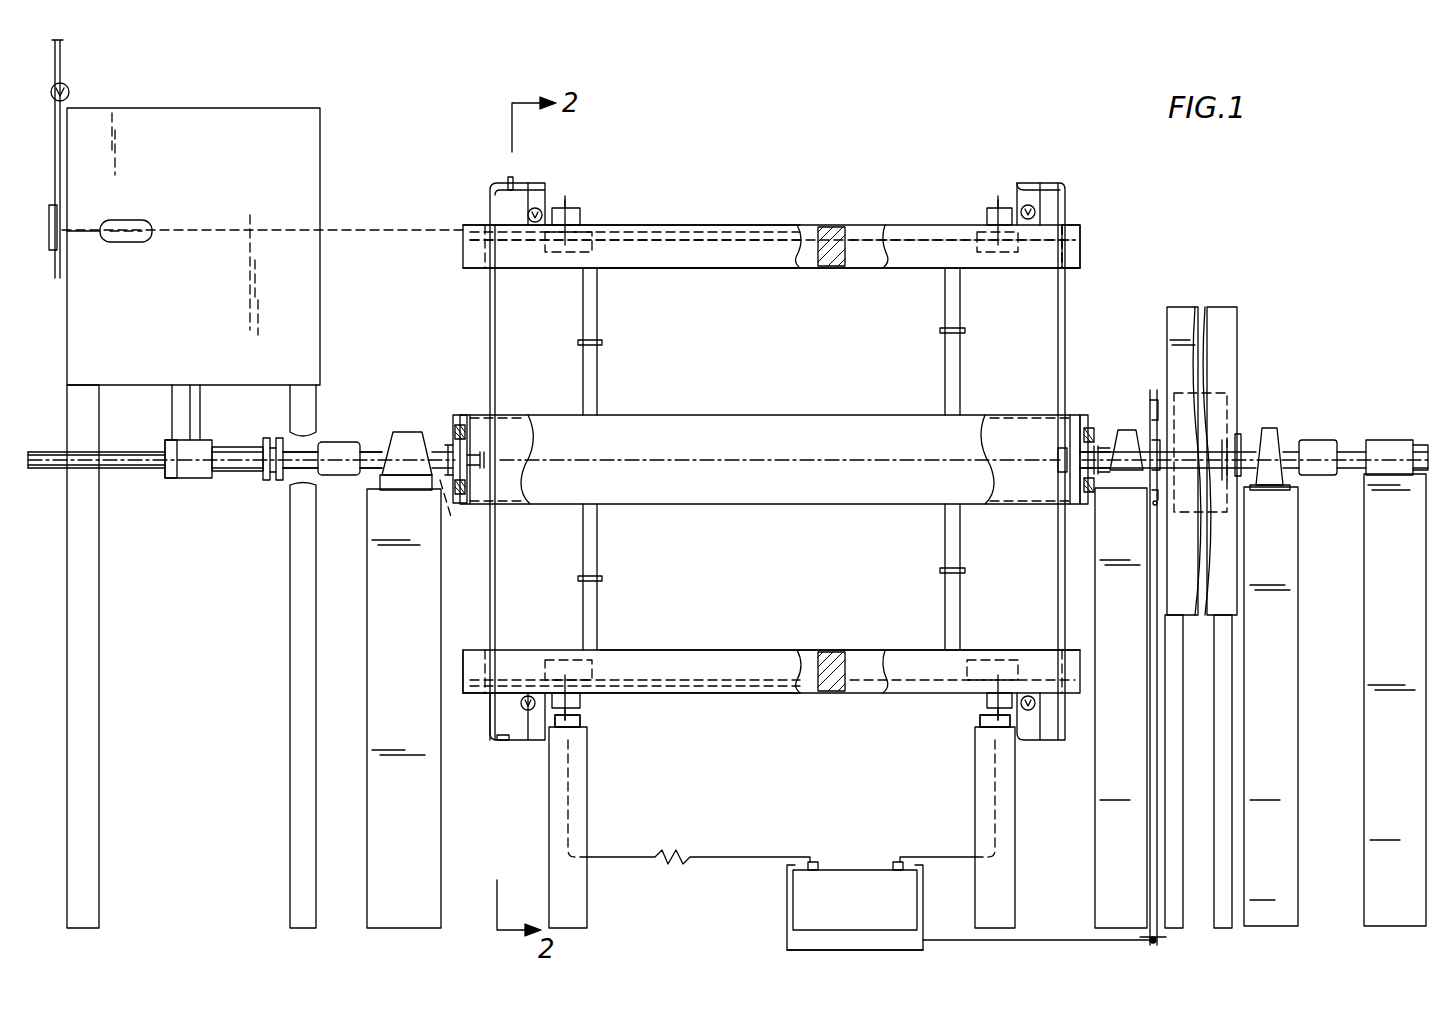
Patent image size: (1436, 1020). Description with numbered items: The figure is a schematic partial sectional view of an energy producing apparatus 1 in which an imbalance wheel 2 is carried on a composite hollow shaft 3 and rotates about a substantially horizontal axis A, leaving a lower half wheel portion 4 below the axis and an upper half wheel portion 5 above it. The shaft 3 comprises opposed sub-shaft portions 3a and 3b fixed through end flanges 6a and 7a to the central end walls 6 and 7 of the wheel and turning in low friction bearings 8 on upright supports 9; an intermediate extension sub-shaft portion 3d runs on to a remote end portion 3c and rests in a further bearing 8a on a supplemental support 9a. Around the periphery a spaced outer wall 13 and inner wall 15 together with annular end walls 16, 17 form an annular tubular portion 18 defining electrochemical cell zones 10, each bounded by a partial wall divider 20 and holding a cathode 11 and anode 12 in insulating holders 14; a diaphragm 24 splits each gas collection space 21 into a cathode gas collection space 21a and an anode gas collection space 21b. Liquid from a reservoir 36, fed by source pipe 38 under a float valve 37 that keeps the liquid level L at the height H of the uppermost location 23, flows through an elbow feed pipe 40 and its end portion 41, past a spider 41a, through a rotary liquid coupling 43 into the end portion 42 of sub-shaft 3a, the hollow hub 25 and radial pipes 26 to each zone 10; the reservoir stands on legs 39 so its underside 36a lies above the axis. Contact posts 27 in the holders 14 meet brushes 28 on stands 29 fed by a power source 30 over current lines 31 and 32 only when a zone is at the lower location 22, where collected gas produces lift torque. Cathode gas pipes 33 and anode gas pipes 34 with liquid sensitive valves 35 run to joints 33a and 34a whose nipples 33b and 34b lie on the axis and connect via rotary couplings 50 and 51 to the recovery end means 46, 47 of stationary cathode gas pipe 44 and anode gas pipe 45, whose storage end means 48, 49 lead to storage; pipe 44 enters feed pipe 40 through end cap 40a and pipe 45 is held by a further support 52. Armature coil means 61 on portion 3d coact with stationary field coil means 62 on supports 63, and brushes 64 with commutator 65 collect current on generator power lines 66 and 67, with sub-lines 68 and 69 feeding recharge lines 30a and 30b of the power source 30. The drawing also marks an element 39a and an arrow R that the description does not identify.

The energy producing apparatus 1 is at (726, 123).
The imbalance wheel 2 is at (463, 245).
The shaft 3 is at (345, 477).
The sub-shaft portion 3a is at (428, 490).
The sub-shaft portion 3b is at (1102, 446).
The remote end portion 3c is at (1290, 438).
The intermediate extension sub-shaft portion 3d is at (1240, 432).
The lower half wheel portion 4 is at (713, 695).
The upper half wheel portion 5 is at (741, 225).
The central end wall 6 is at (467, 490).
The interconnecting end flange 6a is at (458, 422).
The central end wall 7 is at (1082, 418).
The interconnecting end flange 7a is at (1084, 436).
The low friction bearing 8 is at (395, 486).
The low friction bearing 8a is at (1270, 428).
The upright stationary support 9 is at (367, 678).
The supplemental support 9a is at (1298, 595).
The electrochemical cell zone 10 is at (668, 270).
The cathode 11 is at (553, 664).
The anode 12 is at (977, 240).
The peripheral outer wall 13 is at (670, 225).
The insulating holder 14 is at (560, 206).
The peripheral inner wall 15 is at (746, 268).
The annular end wall 16 is at (463, 678).
The annular end wall 17 is at (1080, 246).
The annular tubular portion 18 is at (833, 225).
The partial wall divider 20 is at (688, 258).
The gas collection space means 21 is at (620, 270).
The cathode gas collection space 21a is at (775, 230).
The anode gas collection space 21b is at (905, 230).
The lower location 22 is at (700, 696).
The uppermost location 23 is at (610, 225).
The gas separating diaphragm means 24 is at (835, 240).
The hollow central hub 25 is at (650, 508).
The radial pipe 26 is at (597, 362).
The contact post 27 is at (570, 214).
The brush 28 is at (560, 727).
The stand 29 is at (549, 862).
The power source 30 is at (800, 912).
The recharge line 30a is at (923, 920).
The recharge line 30b is at (787, 885).
The current line 31 is at (615, 857).
The current line 32 is at (970, 857).
The cathode gas pipe 33 is at (496, 347).
The cathode gas flow connection nipple joint 33a is at (488, 470).
The flow connection nipple 33b is at (472, 400).
The anode gas pipe 34 is at (1066, 336).
The anode gas flow connection nipple joint 34a is at (1058, 455).
The flow connection nipple 34b is at (1081, 471).
The valve 35 is at (528, 230).
The liquid reservoir 36 is at (100, 336).
The underside 36a is at (112, 388).
The float valve 37 is at (132, 220).
The source pipe 38 is at (62, 78).
The leg 39 is at (88, 698).
The shaft section 39a is at (292, 470).
The elbow liquid feed pipe 40 is at (176, 480).
The end cap 40a is at (165, 455).
The horizontal stationary feed pipe end portion 41 is at (220, 472).
The internal spider 41a is at (270, 438).
The end portion 42 is at (370, 450).
The rotary liquid flow coupling means 43 is at (335, 442).
The cathode gas pipe 44 is at (48, 470).
The anode gas pipe 45 is at (1224, 415).
The cathode gas recovery end means 46 is at (453, 507).
The anode gas recovery end means 47 is at (1106, 448).
The storage end means 48 is at (38, 450).
The storage end means 49 is at (1416, 442).
The rotary cathode gas flow coupling arrangement 50 is at (450, 445).
The rotary anode gas flow coupling arrangement 51 is at (1088, 446).
The further support 52 is at (1364, 550).
The armature coil means 61 is at (1218, 512).
The stationary field coil means 62 is at (1222, 307).
The support 63 is at (1172, 700).
The contact brush 64 is at (1152, 400).
The commutator means 65 is at (1188, 400).
The generator power line 66 is at (1150, 945).
The generator power line 67 is at (1160, 952).
The sub-line 68 is at (1058, 942).
The sub-line 69 is at (880, 950).
The horizontal axis A is at (640, 458).
The height H is at (348, 230).
The liquid level L is at (212, 230).
The direction of rotation R is at (668, 866).